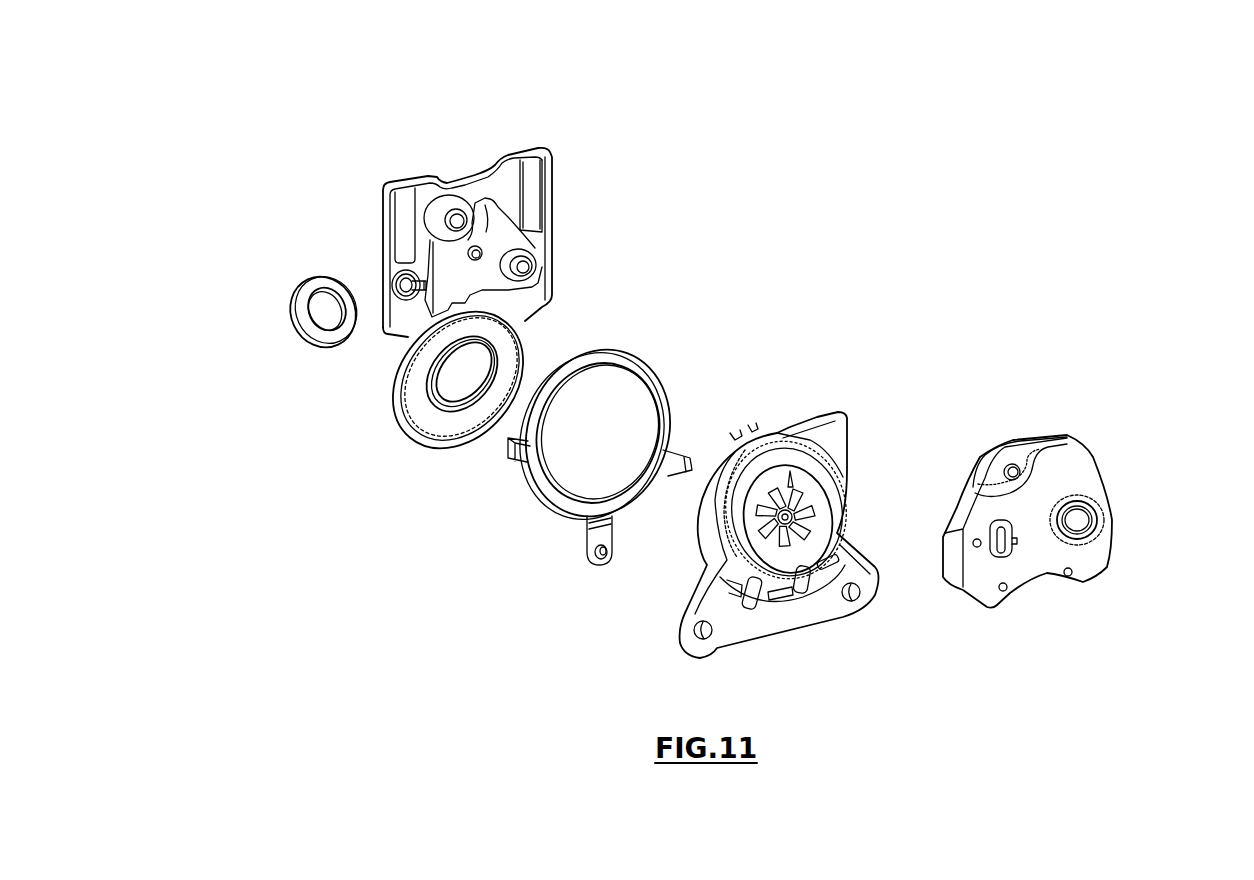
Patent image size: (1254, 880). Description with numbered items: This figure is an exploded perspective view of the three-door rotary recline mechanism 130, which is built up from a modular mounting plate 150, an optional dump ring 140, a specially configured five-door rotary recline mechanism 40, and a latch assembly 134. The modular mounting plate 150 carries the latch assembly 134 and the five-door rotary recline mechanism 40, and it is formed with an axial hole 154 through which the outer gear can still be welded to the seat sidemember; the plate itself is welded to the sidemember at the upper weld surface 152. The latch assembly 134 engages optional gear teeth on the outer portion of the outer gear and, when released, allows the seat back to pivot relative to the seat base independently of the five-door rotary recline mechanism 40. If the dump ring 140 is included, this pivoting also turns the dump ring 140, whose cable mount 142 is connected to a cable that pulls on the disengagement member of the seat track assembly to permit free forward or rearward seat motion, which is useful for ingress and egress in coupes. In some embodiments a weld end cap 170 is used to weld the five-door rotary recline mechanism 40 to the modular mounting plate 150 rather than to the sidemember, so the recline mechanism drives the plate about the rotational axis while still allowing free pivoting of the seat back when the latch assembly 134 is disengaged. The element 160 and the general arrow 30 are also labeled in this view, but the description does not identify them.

The latch assembly 30 is at (427, 607).
The five-door rotary recline mechanism 40 is at (858, 378).
The three-door rotary recline mechanism 130 is at (893, 220).
The latch assembly 134 is at (1090, 450).
The dump ring 140 is at (642, 365).
The cable mount 142 is at (590, 558).
The modular mounting plate 150 is at (507, 157).
The upper weld surface 152 is at (532, 183).
The axial hole 154 is at (472, 372).
The disc 160 is at (413, 400).
The weld end cap 170 is at (300, 293).